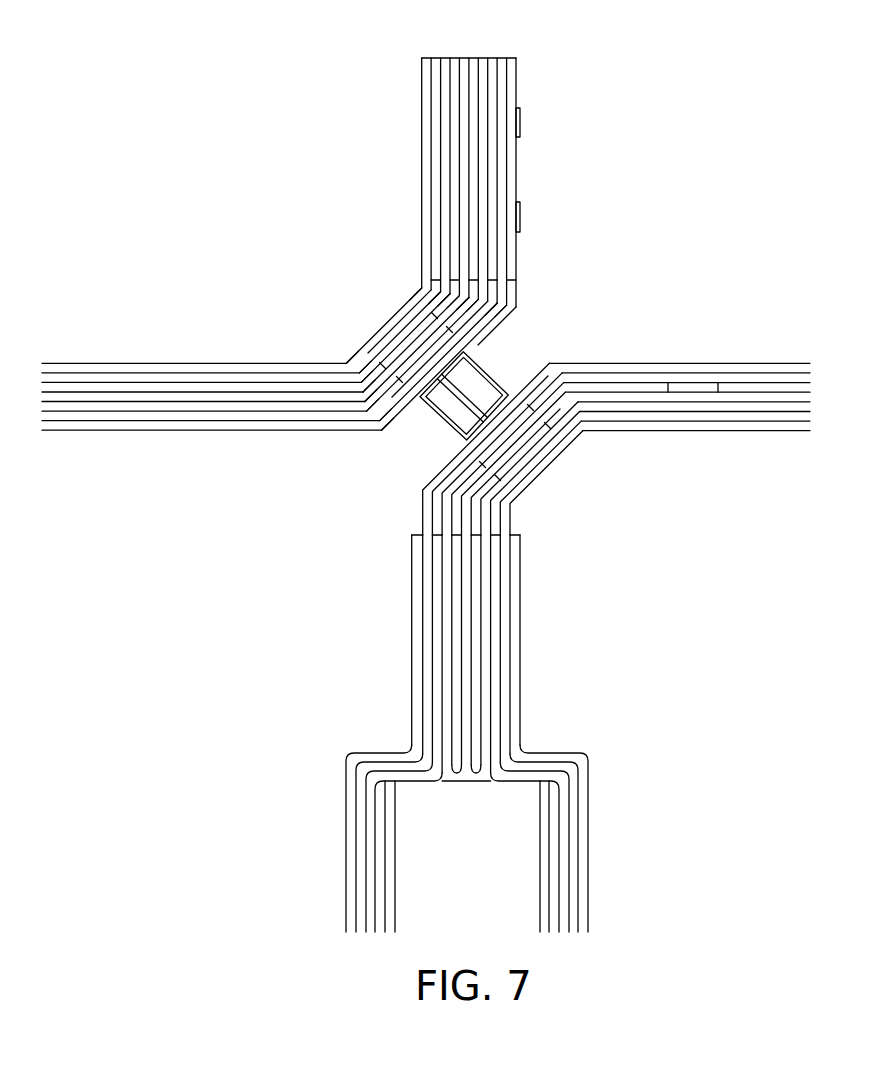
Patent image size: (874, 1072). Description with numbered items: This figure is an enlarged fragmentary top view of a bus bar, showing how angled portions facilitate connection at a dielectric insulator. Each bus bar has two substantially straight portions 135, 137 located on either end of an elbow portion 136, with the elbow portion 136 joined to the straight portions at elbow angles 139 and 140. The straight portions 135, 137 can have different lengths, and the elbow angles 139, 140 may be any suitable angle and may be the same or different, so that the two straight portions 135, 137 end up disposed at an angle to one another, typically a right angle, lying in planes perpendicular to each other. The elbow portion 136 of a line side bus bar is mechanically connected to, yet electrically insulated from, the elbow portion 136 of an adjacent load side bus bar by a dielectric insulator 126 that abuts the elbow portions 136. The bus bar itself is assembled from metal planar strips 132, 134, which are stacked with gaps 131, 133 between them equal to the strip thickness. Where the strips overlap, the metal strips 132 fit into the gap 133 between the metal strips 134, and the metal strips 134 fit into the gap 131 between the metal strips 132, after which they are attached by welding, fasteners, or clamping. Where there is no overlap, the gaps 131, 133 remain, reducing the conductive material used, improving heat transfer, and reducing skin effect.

The dielectric insulator 126 is at (448, 412).
The gap 131 is at (505, 755).
The metal strips 132 is at (457, 652).
The gap 133 is at (465, 483).
The metal strips 134 is at (465, 706).
The straight portion 135 is at (450, 115).
The elbow portion 136 is at (398, 313).
The straight portion 137 is at (212, 397).
The elbow angle 139 is at (350, 363).
The elbow angle 140 is at (420, 296).